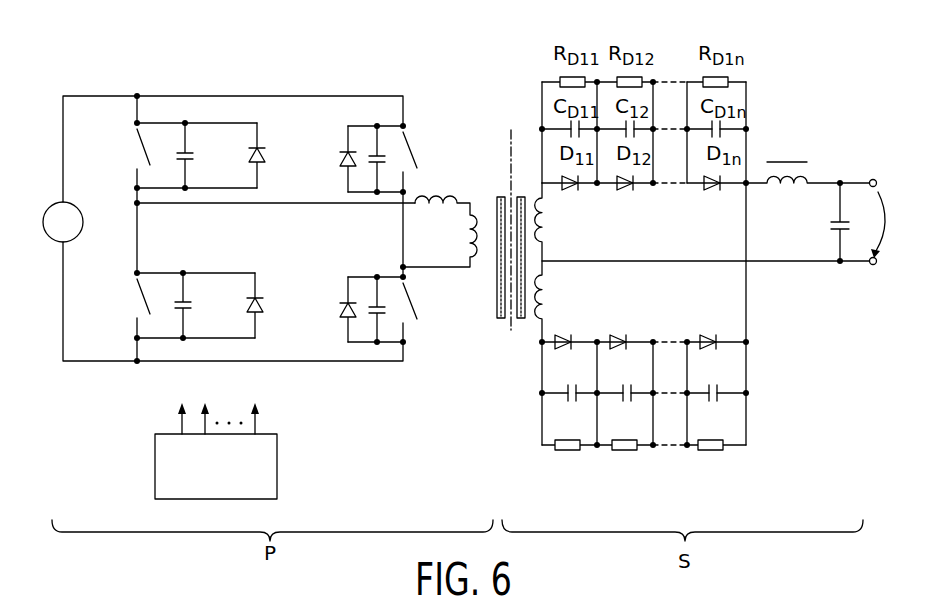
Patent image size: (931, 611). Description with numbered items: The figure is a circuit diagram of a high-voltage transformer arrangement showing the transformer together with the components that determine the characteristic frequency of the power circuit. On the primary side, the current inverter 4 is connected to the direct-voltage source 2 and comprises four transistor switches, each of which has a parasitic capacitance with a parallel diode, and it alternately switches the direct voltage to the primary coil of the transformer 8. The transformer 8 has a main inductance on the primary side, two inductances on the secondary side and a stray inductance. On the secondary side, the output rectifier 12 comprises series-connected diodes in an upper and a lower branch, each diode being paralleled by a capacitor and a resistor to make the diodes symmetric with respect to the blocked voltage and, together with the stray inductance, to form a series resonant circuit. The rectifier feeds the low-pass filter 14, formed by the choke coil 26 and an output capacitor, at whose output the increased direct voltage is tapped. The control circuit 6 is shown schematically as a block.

The direct-voltage source 2 is at (81, 231).
The current inverter 4 is at (413, 87).
The control circuit 6 is at (270, 462).
The transformer 8 is at (491, 341).
The output rectifier 12 is at (752, 455).
The low-pass filter 14 is at (826, 179).
The choke coil 26 is at (809, 190).